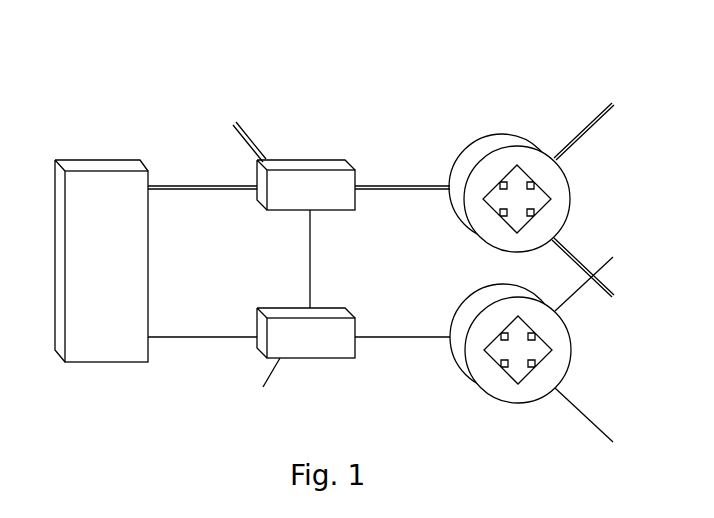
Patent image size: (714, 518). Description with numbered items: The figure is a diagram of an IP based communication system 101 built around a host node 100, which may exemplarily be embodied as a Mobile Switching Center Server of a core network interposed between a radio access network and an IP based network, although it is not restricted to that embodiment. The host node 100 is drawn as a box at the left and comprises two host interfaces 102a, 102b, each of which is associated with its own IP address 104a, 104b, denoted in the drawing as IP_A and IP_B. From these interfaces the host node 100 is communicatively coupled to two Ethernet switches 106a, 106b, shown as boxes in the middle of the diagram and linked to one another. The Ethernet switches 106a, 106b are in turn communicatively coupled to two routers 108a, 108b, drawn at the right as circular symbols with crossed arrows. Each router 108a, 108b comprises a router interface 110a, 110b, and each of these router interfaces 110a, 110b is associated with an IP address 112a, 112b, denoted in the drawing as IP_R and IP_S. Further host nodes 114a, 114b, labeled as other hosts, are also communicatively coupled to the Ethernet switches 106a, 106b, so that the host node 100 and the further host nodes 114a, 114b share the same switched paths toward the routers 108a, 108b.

The host node 100 is at (57, 156).
The IP based communication system 101 is at (546, 69).
The host interface 102a is at (147, 167).
The host interface 102b is at (152, 340).
The IP address 104a is at (165, 165).
The IP address 104b is at (172, 337).
The Ethernet switch 106a is at (308, 160).
The Ethernet switch 106b is at (310, 358).
The router 108a is at (518, 133).
The router 108b is at (533, 402).
The router interface 110a is at (447, 180).
The router interface 110b is at (448, 339).
The IP address 112a is at (415, 165).
The IP address 112b is at (425, 338).
The further host node 114a is at (236, 82).
The further host node 114b is at (250, 424).